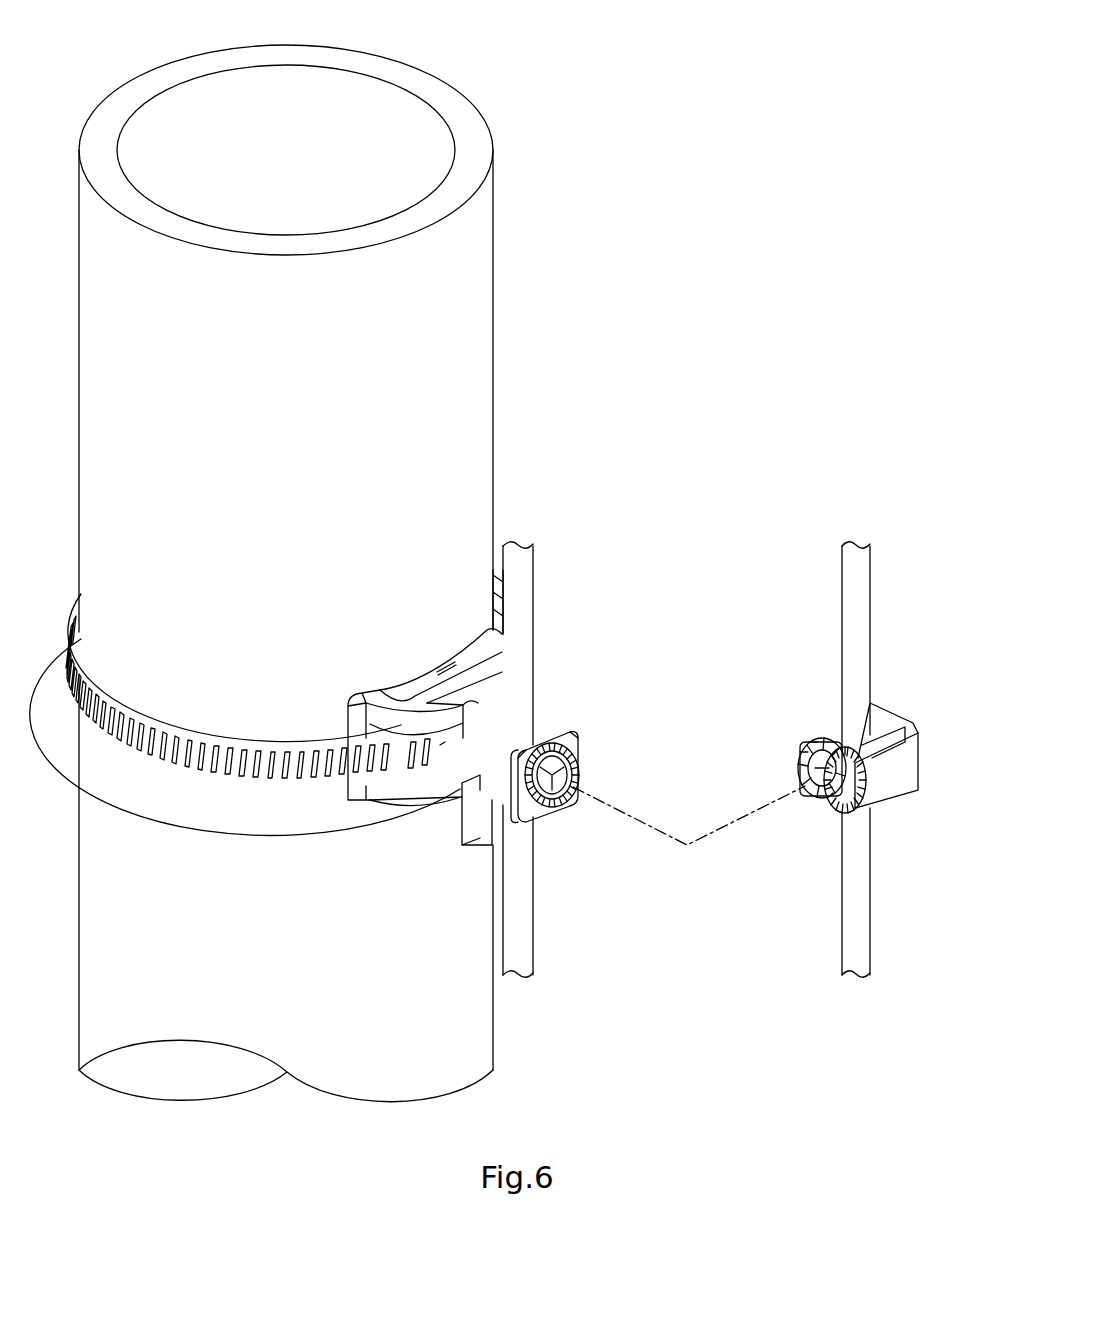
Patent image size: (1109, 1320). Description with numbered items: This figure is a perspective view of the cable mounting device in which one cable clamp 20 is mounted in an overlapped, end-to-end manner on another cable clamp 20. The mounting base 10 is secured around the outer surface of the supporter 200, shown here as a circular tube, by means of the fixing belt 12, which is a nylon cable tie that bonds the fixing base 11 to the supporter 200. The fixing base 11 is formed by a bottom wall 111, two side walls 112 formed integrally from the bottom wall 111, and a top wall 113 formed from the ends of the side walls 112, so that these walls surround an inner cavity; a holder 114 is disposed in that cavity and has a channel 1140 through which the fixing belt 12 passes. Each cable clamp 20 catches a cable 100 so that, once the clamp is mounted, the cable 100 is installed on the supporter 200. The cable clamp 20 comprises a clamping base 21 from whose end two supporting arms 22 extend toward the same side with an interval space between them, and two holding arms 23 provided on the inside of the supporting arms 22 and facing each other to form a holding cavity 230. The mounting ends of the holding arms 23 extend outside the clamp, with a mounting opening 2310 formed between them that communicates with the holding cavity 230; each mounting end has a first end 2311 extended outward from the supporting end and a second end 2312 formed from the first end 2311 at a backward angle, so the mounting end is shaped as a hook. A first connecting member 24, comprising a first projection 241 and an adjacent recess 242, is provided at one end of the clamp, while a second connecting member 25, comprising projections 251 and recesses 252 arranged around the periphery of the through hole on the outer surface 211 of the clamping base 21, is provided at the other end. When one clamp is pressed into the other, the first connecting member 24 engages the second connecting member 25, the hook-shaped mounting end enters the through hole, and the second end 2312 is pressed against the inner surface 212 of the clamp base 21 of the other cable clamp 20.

The supporter 200 is at (450, 462).
The cable 100 is at (515, 628).
The mounting base 10 is at (250, 808).
The fixing base 11 is at (363, 688).
The bottom wall 111 is at (356, 719).
The side wall 112 is at (405, 716).
The top wall 113 is at (468, 802).
The holder 114 is at (437, 762).
The channel 1140 is at (418, 770).
The fixing belt 12 is at (217, 772).
The clamping base 21 is at (571, 736).
The outer surface 211 is at (574, 745).
The inner surface 212 is at (558, 722).
The second connecting member 25 is at (564, 790).
The projection 251 is at (549, 806).
The recess 252 is at (545, 808).
The cable clamp 20 is at (905, 690).
The supporting arm 22 is at (882, 780).
The holding arm 23 is at (882, 752).
The holding cavity 230 is at (838, 745).
The mounting opening 2310 is at (803, 767).
The first end 2311 is at (832, 794).
The second end 2312 is at (838, 802).
The first connecting member 24 is at (862, 793).
The first projection 241 is at (808, 752).
The recess 242 is at (817, 742).